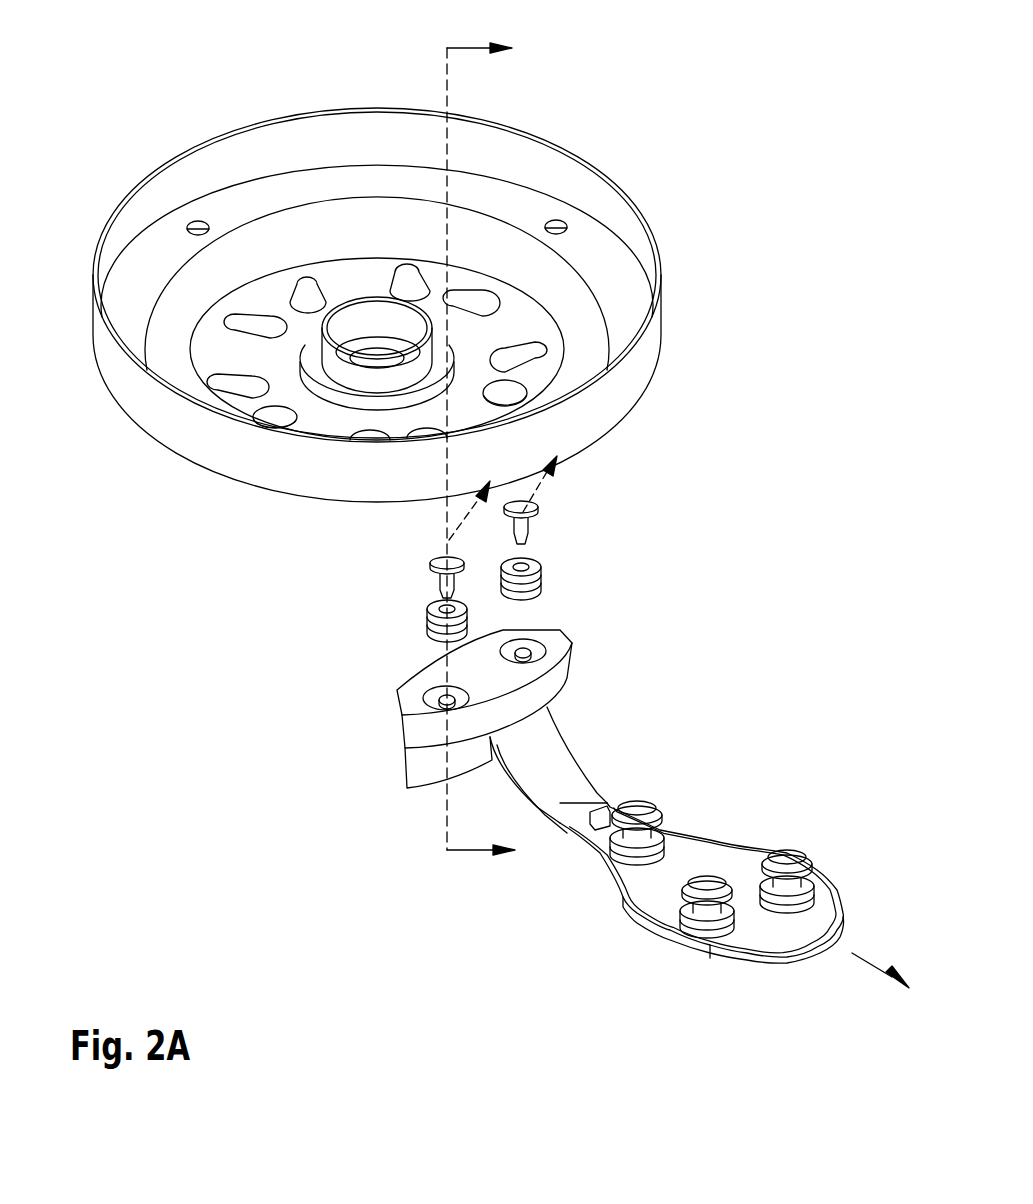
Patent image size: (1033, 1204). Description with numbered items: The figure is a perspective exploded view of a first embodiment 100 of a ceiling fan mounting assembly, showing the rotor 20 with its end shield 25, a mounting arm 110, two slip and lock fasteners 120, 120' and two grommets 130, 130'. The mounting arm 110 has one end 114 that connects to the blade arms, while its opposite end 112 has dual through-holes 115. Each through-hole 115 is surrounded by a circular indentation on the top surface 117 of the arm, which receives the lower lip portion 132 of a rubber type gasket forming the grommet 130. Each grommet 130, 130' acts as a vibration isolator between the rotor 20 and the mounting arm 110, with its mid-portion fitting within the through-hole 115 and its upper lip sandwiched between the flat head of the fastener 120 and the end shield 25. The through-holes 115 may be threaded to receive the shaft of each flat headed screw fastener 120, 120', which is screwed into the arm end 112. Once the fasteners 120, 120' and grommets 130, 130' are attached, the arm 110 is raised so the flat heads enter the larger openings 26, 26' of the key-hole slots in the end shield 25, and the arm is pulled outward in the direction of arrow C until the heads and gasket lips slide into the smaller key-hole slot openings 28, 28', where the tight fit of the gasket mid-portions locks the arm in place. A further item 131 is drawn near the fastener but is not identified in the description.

The rotor 20 is at (641, 350).
The end shield 25 is at (245, 482).
The larger opening of key-hole slot 26 is at (489, 400).
The larger opening of key-hole slot 26' is at (502, 343).
The smaller key-hole slot opening 28 is at (582, 306).
The smaller key-hole slot opening 28' is at (372, 304).
The first embodiment 100 is at (176, 600).
The mounting arm 110 is at (560, 765).
The end of mounting arm 112 is at (565, 652).
The end of mounting arm 114 is at (710, 838).
The through-hole 115 is at (421, 698).
The top surface of the arm 117 is at (438, 705).
The slip and lock fastener 120 is at (383, 577).
The slip and lock fastener 120' is at (595, 508).
The grommet 130 is at (385, 624).
The grommet 130' is at (593, 564).
The insertion direction 131 is at (476, 518).
The lower lip portion 132 is at (566, 481).